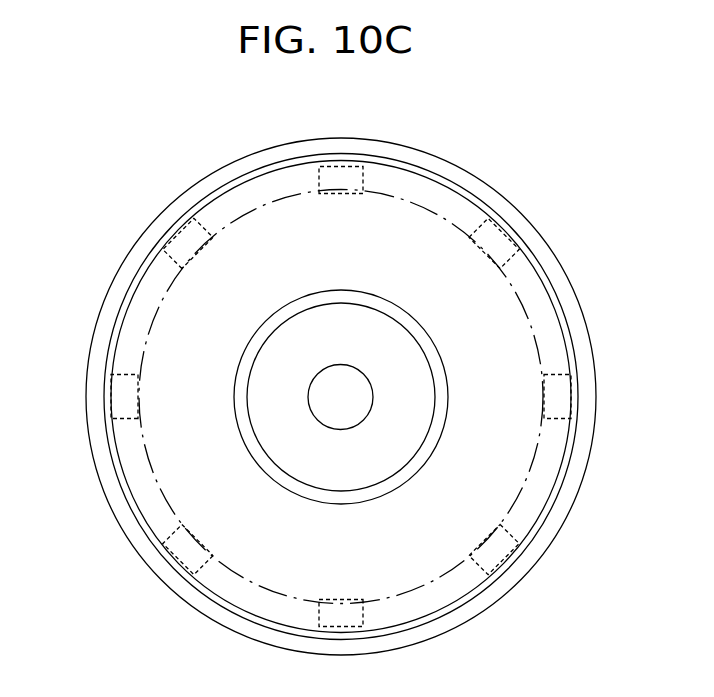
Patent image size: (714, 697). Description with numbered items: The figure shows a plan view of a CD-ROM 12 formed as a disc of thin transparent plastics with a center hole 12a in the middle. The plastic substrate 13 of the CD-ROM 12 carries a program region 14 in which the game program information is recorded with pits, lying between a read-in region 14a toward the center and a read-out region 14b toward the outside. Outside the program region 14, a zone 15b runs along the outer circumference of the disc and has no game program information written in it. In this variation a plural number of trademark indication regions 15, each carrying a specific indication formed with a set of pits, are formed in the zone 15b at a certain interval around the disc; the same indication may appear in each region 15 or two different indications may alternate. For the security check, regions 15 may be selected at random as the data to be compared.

The CD-ROM 12 is at (543, 211).
The center hole 12a is at (369, 412).
The plastic substrate 13 is at (506, 483).
The program region 14 is at (272, 220).
The read-in region 14a is at (247, 360).
The read-out region 14b is at (145, 262).
The trademark indication region 15 is at (372, 170).
The zone 15b is at (548, 317).